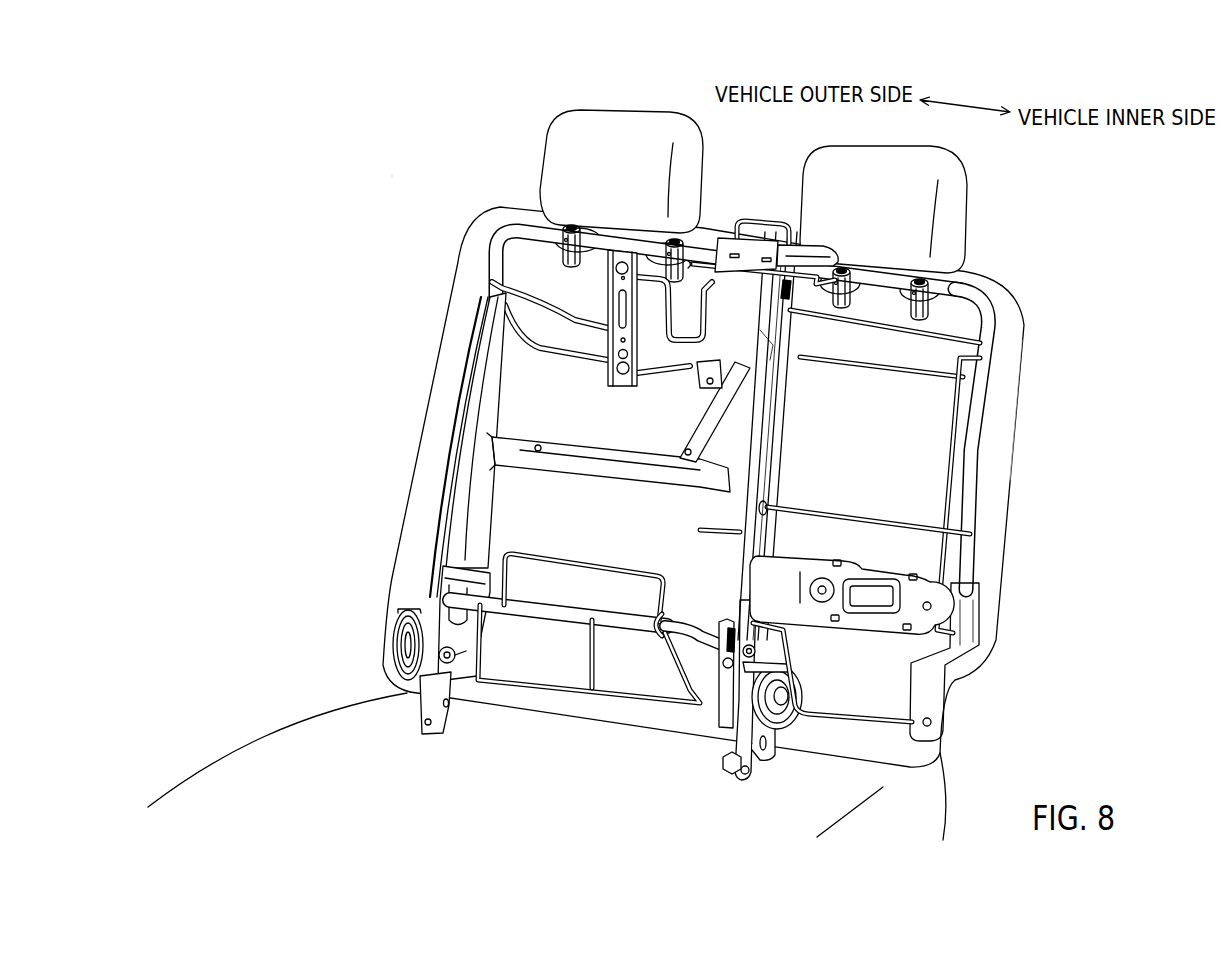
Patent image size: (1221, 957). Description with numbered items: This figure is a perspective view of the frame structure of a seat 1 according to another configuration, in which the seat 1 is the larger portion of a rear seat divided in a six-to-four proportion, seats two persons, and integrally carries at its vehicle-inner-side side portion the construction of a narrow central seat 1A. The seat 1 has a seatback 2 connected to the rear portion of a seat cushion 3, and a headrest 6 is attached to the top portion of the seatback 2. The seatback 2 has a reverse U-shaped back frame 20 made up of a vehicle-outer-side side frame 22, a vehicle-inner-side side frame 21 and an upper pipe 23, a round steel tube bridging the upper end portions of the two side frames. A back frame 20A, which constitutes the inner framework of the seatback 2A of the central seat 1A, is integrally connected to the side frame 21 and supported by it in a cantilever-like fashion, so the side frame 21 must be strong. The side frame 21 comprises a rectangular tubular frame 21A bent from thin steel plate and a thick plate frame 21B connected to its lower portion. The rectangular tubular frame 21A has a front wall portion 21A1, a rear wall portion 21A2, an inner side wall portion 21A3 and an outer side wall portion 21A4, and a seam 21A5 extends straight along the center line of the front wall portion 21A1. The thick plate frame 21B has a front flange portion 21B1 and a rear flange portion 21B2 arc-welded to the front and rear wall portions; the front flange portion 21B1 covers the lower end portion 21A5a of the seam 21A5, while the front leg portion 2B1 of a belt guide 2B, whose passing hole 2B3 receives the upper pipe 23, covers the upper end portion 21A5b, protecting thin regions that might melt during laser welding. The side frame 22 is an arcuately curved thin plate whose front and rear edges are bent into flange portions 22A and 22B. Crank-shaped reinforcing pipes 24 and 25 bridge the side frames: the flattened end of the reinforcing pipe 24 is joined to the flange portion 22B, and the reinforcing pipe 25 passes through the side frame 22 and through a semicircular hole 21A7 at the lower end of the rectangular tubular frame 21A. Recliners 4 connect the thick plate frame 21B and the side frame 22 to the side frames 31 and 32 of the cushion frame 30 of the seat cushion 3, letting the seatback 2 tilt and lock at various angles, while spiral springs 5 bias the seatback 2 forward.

The seat 1 is at (393, 160).
The central seat 1A is at (997, 199).
The seatback 2 is at (441, 327).
The seatback 2A is at (1016, 410).
The belt guide 2B is at (780, 203).
The front leg portion 2B1 is at (772, 237).
The passing hole 2B3 is at (813, 235).
The seat cushion 3 is at (262, 749).
The recliner 4 is at (423, 658).
The spiral spring 5 is at (400, 630).
The headrest 6 is at (560, 148).
The back frame 20 is at (742, 439).
The back frame 20A is at (981, 295).
The side frame 21 is at (753, 497).
The rectangular tubular frame 21A is at (834, 477).
The front wall portion 21A1 is at (757, 413).
The rear wall portion 21A2 is at (777, 447).
The inner side wall portion 21A3 is at (750, 350).
The outer side wall portion 21A4 is at (760, 473).
The seam 21A5 is at (834, 491).
The lower end portion 21A5a is at (832, 672).
The upper end portion 21A5b is at (761, 272).
The semicircular hole 21A7 is at (753, 662).
The thick plate frame 21B is at (692, 690).
The front flange portion 21B1 is at (727, 670).
The rear flange portion 21B2 is at (755, 647).
The side frame 22 is at (417, 487).
The flange portion 22A is at (435, 535).
The flange portion 22B is at (470, 500).
The upper pipe 23 is at (517, 235).
The reinforcing pipe 24 is at (562, 447).
The reinforcing pipe 25 is at (527, 608).
The cushion frame 30 is at (557, 701).
The side frame 31 is at (753, 757).
The side frame 32 is at (430, 688).